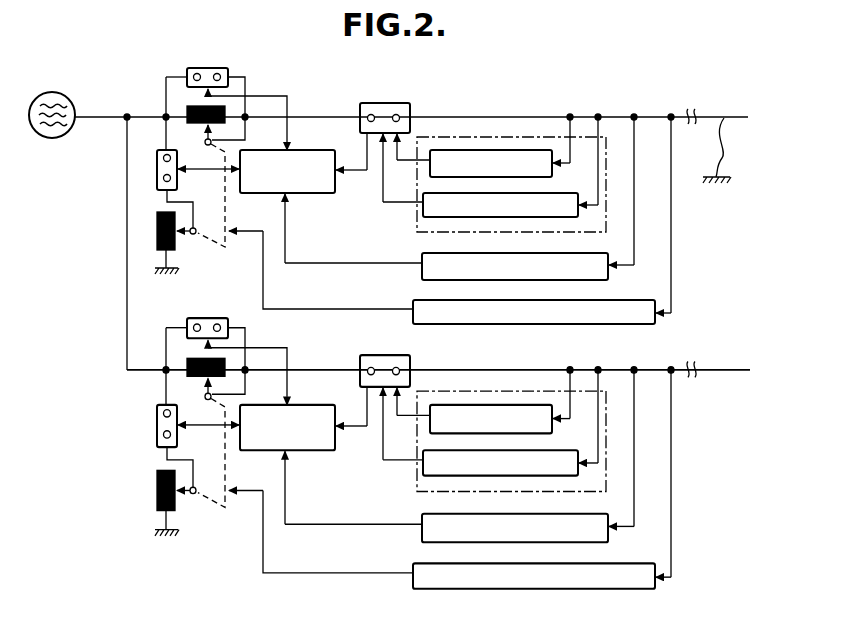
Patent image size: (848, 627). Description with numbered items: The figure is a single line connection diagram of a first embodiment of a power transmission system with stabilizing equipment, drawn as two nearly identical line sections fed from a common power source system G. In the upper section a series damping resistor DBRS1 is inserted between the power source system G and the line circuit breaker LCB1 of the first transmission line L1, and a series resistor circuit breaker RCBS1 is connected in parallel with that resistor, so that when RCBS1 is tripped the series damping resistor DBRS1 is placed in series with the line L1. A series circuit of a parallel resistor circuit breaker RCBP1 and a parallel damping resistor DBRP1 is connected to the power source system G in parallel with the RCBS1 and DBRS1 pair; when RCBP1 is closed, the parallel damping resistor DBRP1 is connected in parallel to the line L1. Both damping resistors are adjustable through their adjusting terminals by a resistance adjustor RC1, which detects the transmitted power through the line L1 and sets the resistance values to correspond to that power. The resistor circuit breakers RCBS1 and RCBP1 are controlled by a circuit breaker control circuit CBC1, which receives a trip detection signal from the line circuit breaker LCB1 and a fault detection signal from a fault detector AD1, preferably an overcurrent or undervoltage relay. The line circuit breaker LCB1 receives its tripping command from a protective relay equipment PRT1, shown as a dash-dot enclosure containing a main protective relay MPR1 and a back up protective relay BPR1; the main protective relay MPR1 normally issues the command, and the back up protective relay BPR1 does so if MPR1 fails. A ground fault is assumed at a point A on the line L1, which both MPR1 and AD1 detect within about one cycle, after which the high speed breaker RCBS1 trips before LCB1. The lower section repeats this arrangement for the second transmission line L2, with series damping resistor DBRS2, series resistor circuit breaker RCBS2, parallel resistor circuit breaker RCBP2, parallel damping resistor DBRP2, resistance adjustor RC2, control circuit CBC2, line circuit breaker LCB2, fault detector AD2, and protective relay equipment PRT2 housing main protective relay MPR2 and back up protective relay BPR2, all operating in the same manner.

The power source system G is at (47, 139).
The fault point A is at (720, 137).
The first transmission line L1 is at (533, 117).
The second transmission line L2 is at (438, 356).
The series resistor circuit breaker RCBS1 is at (206, 68).
The series resistor circuit breaker RCBS2 is at (208, 315).
The series damping resistor DBRS1 is at (195, 105).
The series damping resistor DBRS2 is at (151, 385).
The parallel resistor circuit breaker RCBP1 is at (157, 170).
The parallel resistor circuit breaker RCBP2 is at (127, 440).
The parallel damping resistor DBRP1 is at (176, 243).
The parallel damping resistor DBRP2 is at (199, 506).
The circuit breaker control circuit CBC1 is at (313, 144).
The circuit breaker control circuit CBC2 is at (297, 414).
The line circuit breaker LCB1 is at (393, 103).
The line circuit breaker LCB2 is at (367, 355).
The main protective relay MPR1 is at (457, 150).
The main protective relay MPR2 is at (491, 386).
The back up protective relay BPR1 is at (423, 212).
The back up protective relay BPR2 is at (461, 472).
The protective relay equipment PRT1 is at (608, 148).
The protective relay equipment PRT2 is at (543, 416).
The fault detector AD1 is at (422, 258).
The fault detector AD2 is at (479, 515).
The resistance adjustor RC1 is at (600, 302).
The resistance adjustor RC2 is at (534, 560).